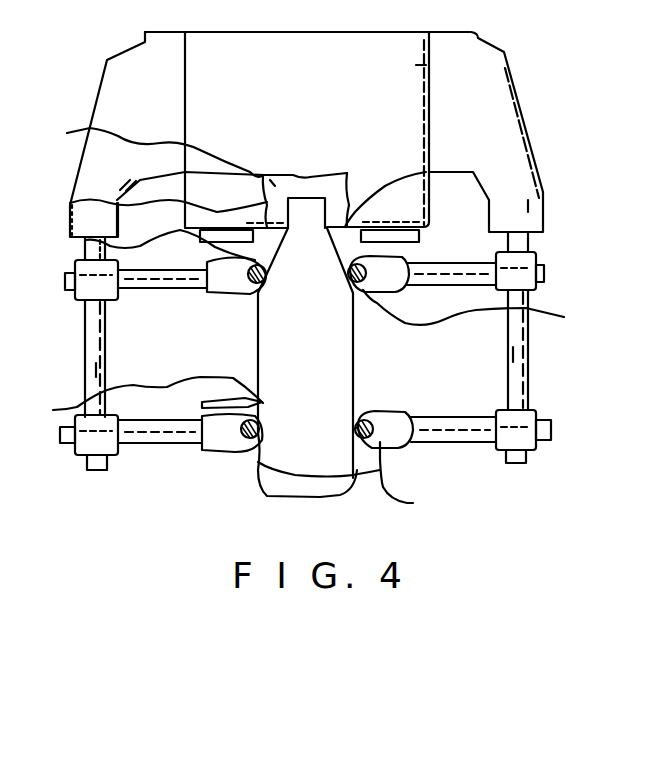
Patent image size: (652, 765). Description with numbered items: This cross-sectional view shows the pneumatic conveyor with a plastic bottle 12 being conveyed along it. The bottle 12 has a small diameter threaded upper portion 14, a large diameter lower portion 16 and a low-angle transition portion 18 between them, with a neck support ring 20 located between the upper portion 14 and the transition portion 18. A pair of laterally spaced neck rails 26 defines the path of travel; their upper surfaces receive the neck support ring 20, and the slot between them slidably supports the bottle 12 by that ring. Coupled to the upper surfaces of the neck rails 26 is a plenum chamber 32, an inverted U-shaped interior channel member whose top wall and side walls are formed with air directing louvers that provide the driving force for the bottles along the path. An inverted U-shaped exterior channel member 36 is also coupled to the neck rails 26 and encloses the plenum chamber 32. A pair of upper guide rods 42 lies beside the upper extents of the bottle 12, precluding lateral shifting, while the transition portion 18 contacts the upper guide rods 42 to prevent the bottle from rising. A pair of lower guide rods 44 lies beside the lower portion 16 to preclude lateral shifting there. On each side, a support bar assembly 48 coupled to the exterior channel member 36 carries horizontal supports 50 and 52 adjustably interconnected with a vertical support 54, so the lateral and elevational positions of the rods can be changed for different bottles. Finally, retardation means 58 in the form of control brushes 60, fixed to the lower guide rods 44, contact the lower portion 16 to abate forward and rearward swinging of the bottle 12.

The plastic bottle 12 is at (328, 488).
The small diameter threaded upper portion 14 is at (70, 203).
The large diameter lower portion 16 is at (262, 466).
The low-angle transition portion 18 is at (207, 265).
The neck support ring 20 is at (426, 172).
The neck rails 26 is at (85, 240).
The plenum chamber 32 is at (145, 149).
The exterior channel member 36 is at (416, 65).
The upper guide rods 42 is at (476, 296).
The lower guide rods 44 is at (453, 466).
The support bar assembly 48 is at (100, 521).
The horizontal support 50 is at (530, 280).
The horizontal support 52 is at (112, 458).
The vertical support 54 is at (87, 375).
The retardation means 58 is at (205, 447).
The control brush 60 is at (140, 403).